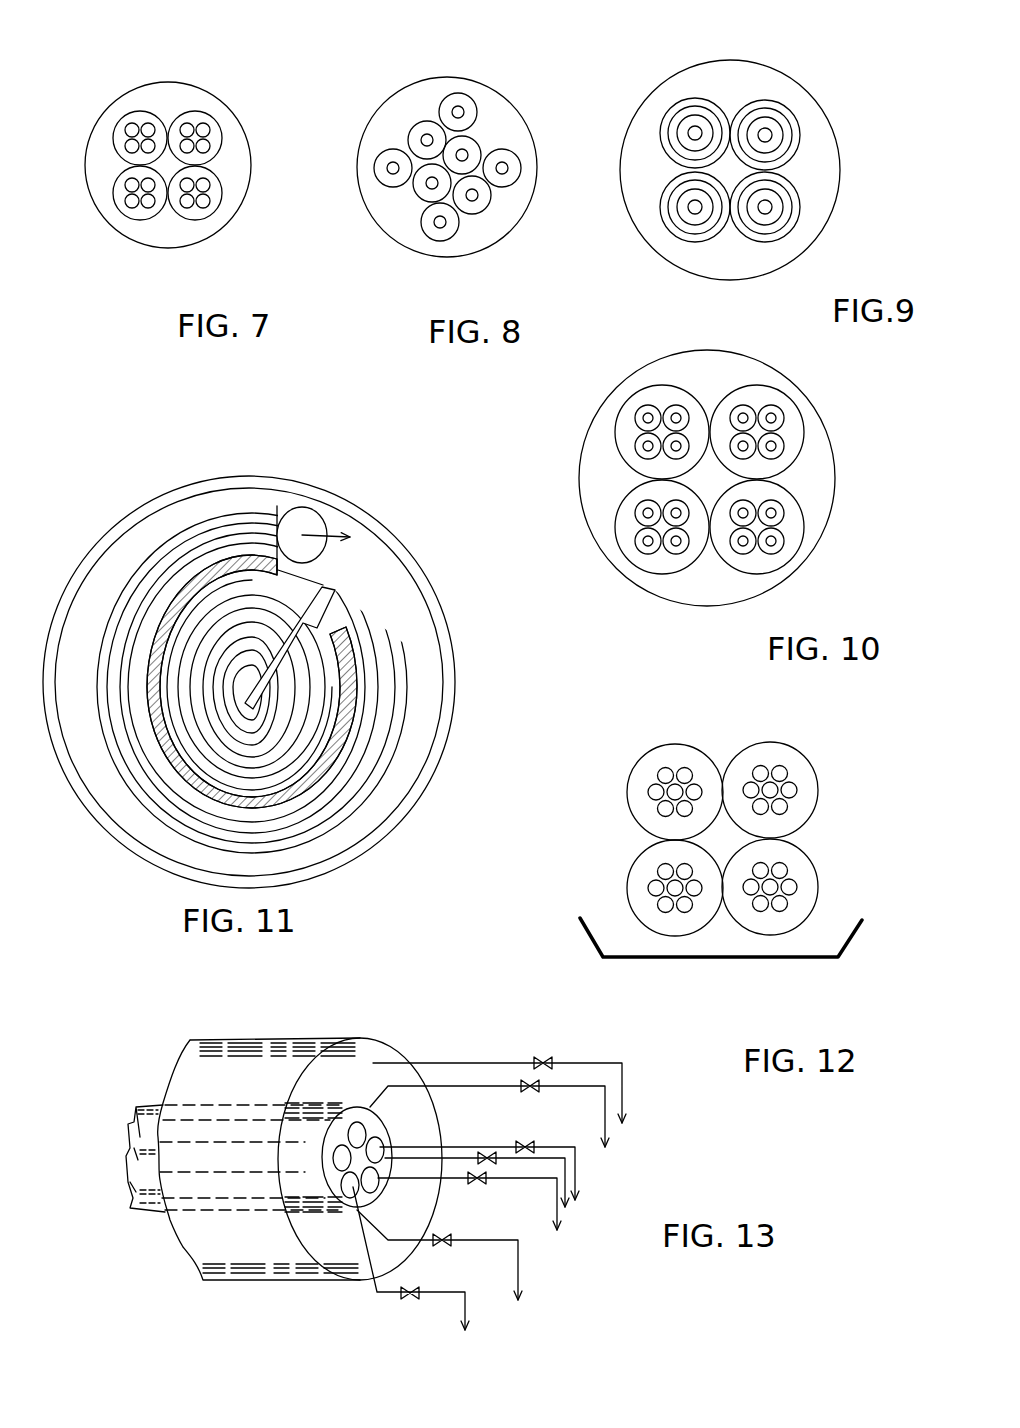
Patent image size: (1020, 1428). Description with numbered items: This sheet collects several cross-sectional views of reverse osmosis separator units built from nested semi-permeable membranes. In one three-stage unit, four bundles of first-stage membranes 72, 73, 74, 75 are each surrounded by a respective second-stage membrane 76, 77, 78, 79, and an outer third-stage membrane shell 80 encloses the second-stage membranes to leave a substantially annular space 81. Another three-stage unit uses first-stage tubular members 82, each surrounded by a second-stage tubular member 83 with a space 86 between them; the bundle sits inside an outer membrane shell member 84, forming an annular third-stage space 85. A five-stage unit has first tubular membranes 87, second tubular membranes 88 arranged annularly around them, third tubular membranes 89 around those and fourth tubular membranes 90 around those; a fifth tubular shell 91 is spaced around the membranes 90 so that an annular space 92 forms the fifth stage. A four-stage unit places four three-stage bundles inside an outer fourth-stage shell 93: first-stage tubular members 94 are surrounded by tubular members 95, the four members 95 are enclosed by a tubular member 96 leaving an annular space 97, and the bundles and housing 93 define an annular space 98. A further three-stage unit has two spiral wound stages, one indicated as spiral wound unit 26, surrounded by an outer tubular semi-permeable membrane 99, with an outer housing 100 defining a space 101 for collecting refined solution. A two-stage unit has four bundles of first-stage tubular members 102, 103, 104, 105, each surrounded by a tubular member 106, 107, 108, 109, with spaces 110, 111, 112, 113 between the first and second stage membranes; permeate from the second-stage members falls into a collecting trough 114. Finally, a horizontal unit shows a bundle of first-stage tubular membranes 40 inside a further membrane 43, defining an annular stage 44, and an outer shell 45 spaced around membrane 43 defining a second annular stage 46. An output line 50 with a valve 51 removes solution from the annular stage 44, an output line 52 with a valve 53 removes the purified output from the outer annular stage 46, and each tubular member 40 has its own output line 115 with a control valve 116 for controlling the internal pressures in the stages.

In FIG. 7, the bundle of first-stage membranes 72 is at (126, 147).
In FIG. 7, the bundle of first-stage membranes 73 is at (207, 147).
In FIG. 7, the bundle of first-stage membranes 74 is at (149, 206).
In FIG. 7, the bundle of first-stage membranes 75 is at (208, 207).
In FIG. 7, the second-stage membrane 76 is at (108, 108).
In FIG. 7, the second-stage membrane 77 is at (226, 108).
In FIG. 7, the second-stage membrane 78 is at (113, 237).
In FIG. 7, the second-stage membrane 79 is at (229, 217).
In FIG. 7, the third-stage membrane shell 80 is at (92, 190).
In FIG. 7, the annular space 81 is at (128, 222).
In FIG. 8, the first-stage semi-permeable tubular member 82 is at (508, 162).
In FIG. 8, the second-stage semi-permeable tubular member 83 is at (478, 140).
In FIG. 8, the outer membrane shell member 84 is at (538, 165).
In FIG. 8, the annular space 85 is at (510, 210).
In FIG. 8, the space 86 is at (422, 130).
In FIG. 9, the first tubular semi-permeable membrane 87 is at (700, 130).
In FIG. 9, the second tubular semi-permeable membrane 88 is at (706, 124).
In FIG. 9, the third tubular semi-permeable membrane 89 is at (683, 108).
In FIG. 9, the fourth tubular semi-permeable membrane 90 is at (670, 110).
In FIG. 9, the fifth tubular semi-permeable shell 91 is at (630, 125).
In FIG. 9, the annular space 92 is at (722, 260).
In FIG. 10, the outer fourth stage shell 93 is at (582, 500).
In FIG. 10, the first stage tubular semi-permeable member 94 is at (778, 448).
In FIG. 10, the tubular semi-permeable member 95 is at (610, 518).
In FIG. 10, the tubular semi-permeable member 96 is at (775, 405).
In FIG. 10, the annular space 97 is at (672, 565).
In FIG. 10, the annular space 98 is at (598, 465).
In FIG. 11, the outer tubular semi-permeable third stage membrane 99 is at (112, 542).
In FIG. 11, the outer housing 100 is at (209, 472).
In FIG. 11, the space 101 is at (325, 498).
In FIG. 11, the channel 26 is at (365, 605).
In FIG. 12, the bundle of first stage tubular semi-permeable members 102 is at (650, 805).
In FIG. 12, the bundle of first stage tubular semi-permeable members 103 is at (793, 800).
In FIG. 12, the bundle of first stage tubular semi-permeable members 104 is at (650, 903).
In FIG. 12, the bundle of first stage tubular semi-permeable members 105 is at (780, 912).
In FIG. 12, the tubular semi-permeable member 106 is at (642, 757).
In FIG. 12, the tubular semi-permeable member 107 is at (803, 755).
In FIG. 12, the tubular semi-permeable member 108 is at (648, 927).
In FIG. 12, the tubular semi-permeable member 109 is at (817, 887).
In FIG. 12, the space 110 is at (636, 761).
In FIG. 12, the space 111 is at (816, 760).
In FIG. 12, the space 112 is at (631, 876).
In FIG. 12, the space 113 is at (806, 921).
In FIG. 12, the tray 114 is at (827, 960).
In FIG. 13, the first stage tubular semi-permeable membrane 40 is at (128, 1162).
In FIG. 13, the semi-permeable membrane 43 is at (193, 1105).
In FIG. 13, the annular stage 44 is at (123, 1132).
In FIG. 13, the outer shell 45 is at (247, 1038).
In FIG. 13, the second annular stage 46 is at (193, 1060).
In FIG. 13, the output line 50 is at (375, 1287).
In FIG. 13, the valve 51 is at (411, 1300).
In FIG. 13, the output line 52 is at (477, 1060).
In FIG. 13, the valve 53 is at (545, 1055).
In FIG. 13, the output line 115 is at (420, 1160).
In FIG. 13, the control valve 116 is at (530, 1092).